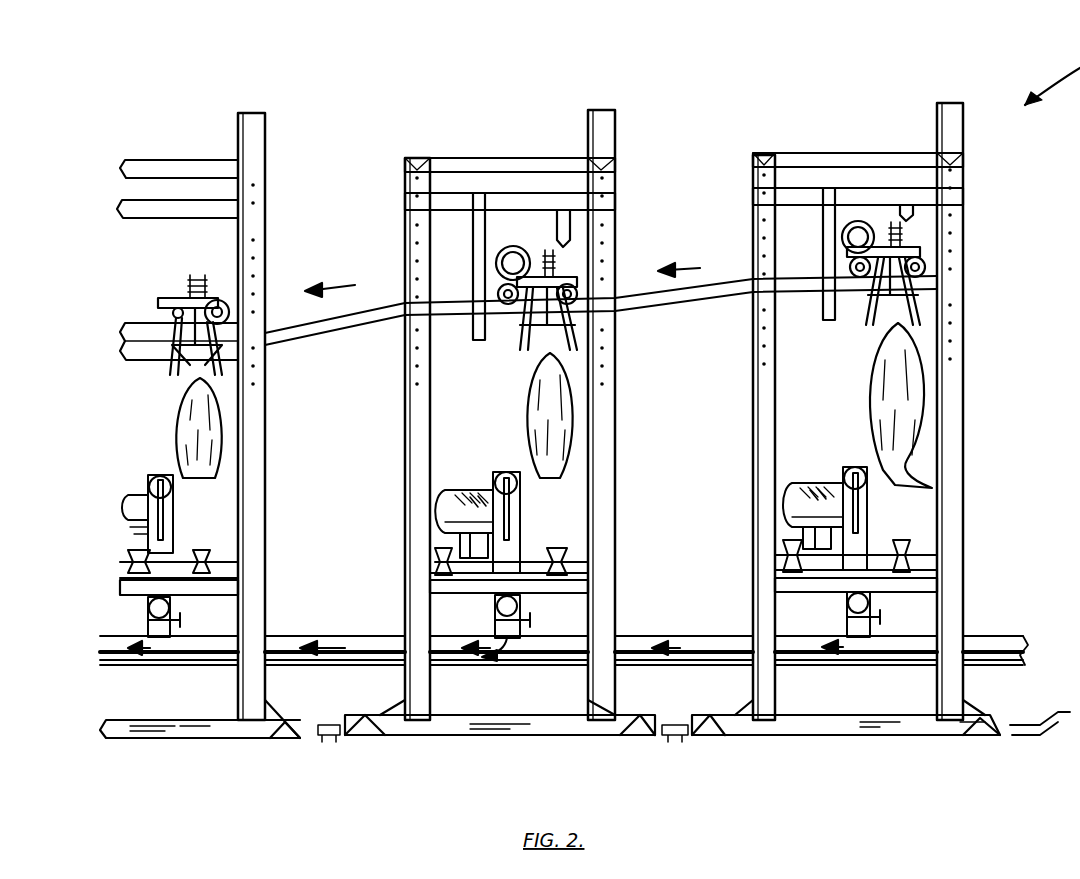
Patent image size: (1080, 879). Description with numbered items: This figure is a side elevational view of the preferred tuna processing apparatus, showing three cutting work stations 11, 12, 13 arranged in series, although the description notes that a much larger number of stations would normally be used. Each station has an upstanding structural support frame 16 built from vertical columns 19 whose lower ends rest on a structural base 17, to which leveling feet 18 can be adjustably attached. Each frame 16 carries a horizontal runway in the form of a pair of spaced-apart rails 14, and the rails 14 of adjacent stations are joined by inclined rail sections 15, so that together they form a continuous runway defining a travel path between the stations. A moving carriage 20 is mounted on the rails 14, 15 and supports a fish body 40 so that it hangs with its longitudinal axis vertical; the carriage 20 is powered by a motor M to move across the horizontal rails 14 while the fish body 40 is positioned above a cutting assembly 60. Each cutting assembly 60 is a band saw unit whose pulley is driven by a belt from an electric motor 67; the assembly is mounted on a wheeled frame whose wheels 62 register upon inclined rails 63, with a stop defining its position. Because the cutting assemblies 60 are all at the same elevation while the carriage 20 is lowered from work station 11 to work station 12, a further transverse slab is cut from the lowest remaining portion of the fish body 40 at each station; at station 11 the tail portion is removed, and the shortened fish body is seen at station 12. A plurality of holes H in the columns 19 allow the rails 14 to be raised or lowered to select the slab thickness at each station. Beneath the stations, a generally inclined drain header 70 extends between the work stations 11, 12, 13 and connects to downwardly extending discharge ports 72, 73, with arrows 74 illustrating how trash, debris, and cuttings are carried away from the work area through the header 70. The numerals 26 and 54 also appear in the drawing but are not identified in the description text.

The cutting work station 11 is at (858, 153).
The cutting work station 12 is at (510, 158).
The cutting work station 13 is at (180, 160).
The rails 14 is at (457, 300).
The inclined rail sections 15 is at (345, 335).
The structural support frame 16 is at (265, 228).
The structural base 17 is at (497, 737).
The feet 18 is at (1074, 775).
The vertical columns 19 is at (755, 520).
The carriage 20 is at (178, 298).
The direction of carcass travel 26 is at (360, 285).
The fish body 40 is at (178, 430).
The carriage 54 is at (502, 665).
The cutting assembly 60 is at (173, 512).
The wheels 62 is at (433, 560).
The inclined rails 63 is at (845, 595).
The electric motor 67 is at (480, 490).
The drain header 70 is at (718, 665).
The discharge port 72 is at (520, 602).
The discharge port 73 is at (172, 600).
The arrows 74 is at (345, 645).
The holes H is at (963, 345).
The motor M is at (843, 237).